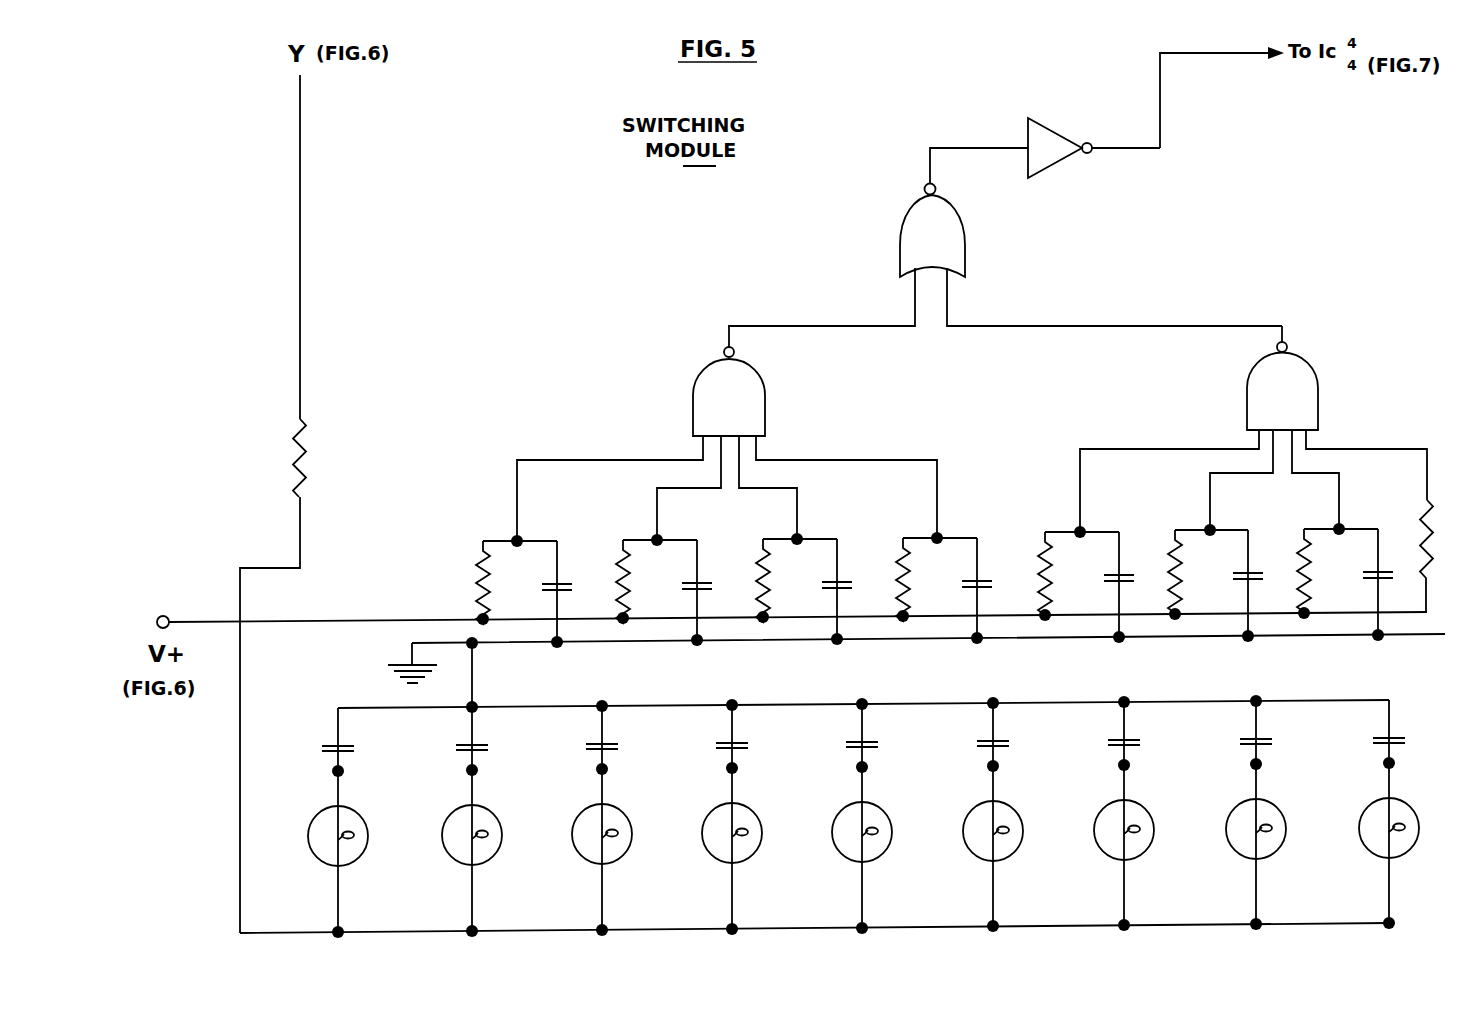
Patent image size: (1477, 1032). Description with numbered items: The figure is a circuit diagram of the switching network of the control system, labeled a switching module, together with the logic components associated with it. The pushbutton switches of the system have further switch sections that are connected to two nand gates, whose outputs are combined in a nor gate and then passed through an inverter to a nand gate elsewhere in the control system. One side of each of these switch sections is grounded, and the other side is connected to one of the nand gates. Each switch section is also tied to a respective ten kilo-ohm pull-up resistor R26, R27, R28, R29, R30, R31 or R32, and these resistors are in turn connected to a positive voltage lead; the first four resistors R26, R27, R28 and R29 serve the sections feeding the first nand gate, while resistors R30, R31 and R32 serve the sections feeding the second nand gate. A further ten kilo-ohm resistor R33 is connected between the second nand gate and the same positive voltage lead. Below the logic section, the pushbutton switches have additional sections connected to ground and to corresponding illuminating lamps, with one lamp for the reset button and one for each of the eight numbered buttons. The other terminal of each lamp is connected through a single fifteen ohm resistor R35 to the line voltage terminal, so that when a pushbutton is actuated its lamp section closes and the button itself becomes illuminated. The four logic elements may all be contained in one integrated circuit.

The 10 kilo-ohm resistor R26 is at (480, 598).
The 10 kilo-ohm resistor R27 is at (627, 598).
The 10 kilo-ohm resistor R28 is at (767, 597).
The 10 kilo-ohm resistor R29 is at (907, 596).
The 10 kilo-ohm resistor R30 is at (1049, 590).
The 10 kilo-ohm resistor R31 is at (1179, 588).
The 10 kilo-ohm resistor R32 is at (1308, 587).
The 10 kilo-ohm resistor R33 is at (1435, 556).
The 15 ohm resistor R35 is at (296, 440).